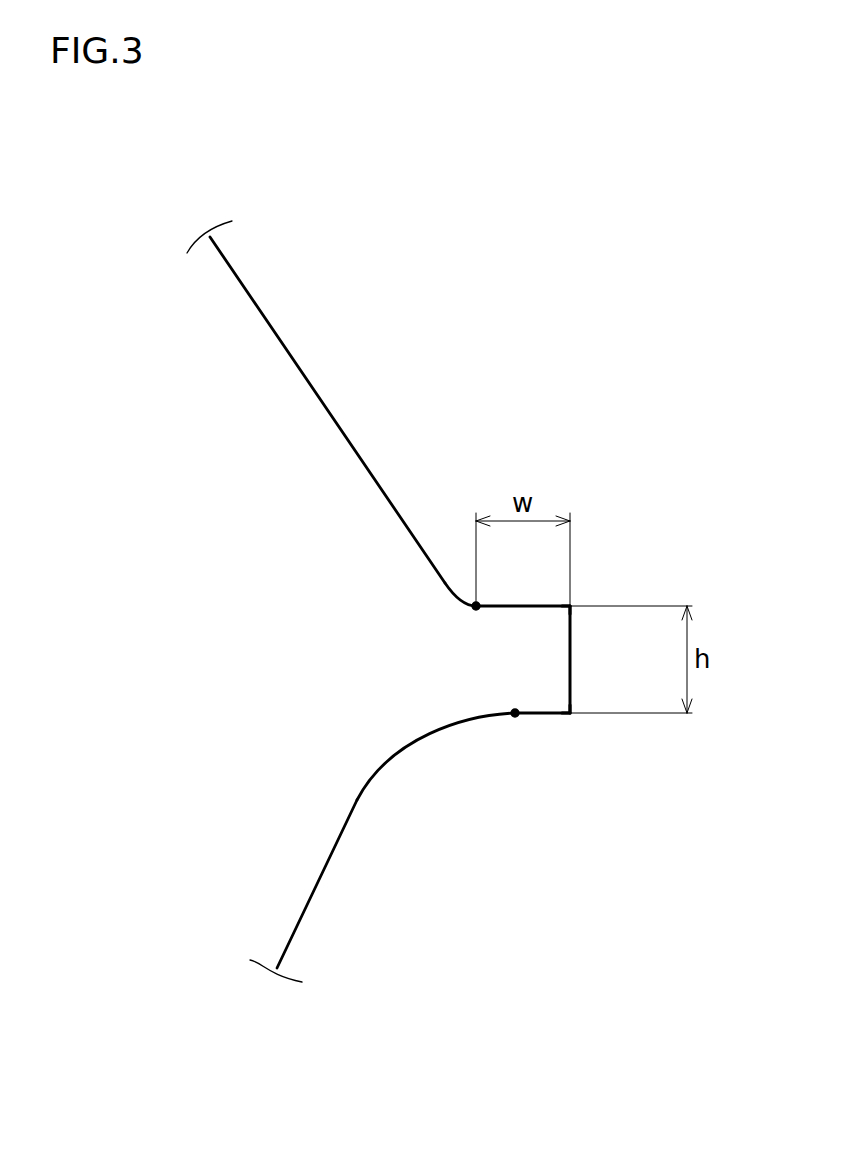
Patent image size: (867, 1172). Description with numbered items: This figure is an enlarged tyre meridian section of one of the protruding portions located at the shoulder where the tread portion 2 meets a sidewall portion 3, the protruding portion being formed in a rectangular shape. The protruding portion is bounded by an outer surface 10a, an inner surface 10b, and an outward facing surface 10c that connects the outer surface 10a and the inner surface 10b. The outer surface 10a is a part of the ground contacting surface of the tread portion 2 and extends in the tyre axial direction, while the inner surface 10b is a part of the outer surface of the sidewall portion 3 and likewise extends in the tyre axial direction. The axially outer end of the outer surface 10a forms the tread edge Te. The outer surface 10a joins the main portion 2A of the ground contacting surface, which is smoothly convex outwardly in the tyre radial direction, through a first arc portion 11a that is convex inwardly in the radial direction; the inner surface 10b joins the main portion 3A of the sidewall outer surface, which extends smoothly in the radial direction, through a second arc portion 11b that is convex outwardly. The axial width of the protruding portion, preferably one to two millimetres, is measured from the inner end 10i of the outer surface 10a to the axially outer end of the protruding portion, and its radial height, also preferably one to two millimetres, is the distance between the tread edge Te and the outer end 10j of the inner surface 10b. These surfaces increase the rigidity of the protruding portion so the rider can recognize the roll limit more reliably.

The tread portion 2 is at (334, 410).
The main portion of the ground contacting surface 2A is at (332, 412).
The sidewall portion 3 is at (384, 857).
The main portion of the outer surface of the sidewall portion 3A is at (317, 925).
The outer surface 10a is at (523, 606).
The inner surface 10b is at (542, 713).
The outward facing surface 10c is at (572, 658).
The inner end of the outer surface 10i is at (476, 606).
The outer end of the inner surface 10j is at (570, 713).
The tread edge Te is at (572, 605).
The first arc portion 11a is at (448, 597).
The second arc portion 11b is at (453, 730).